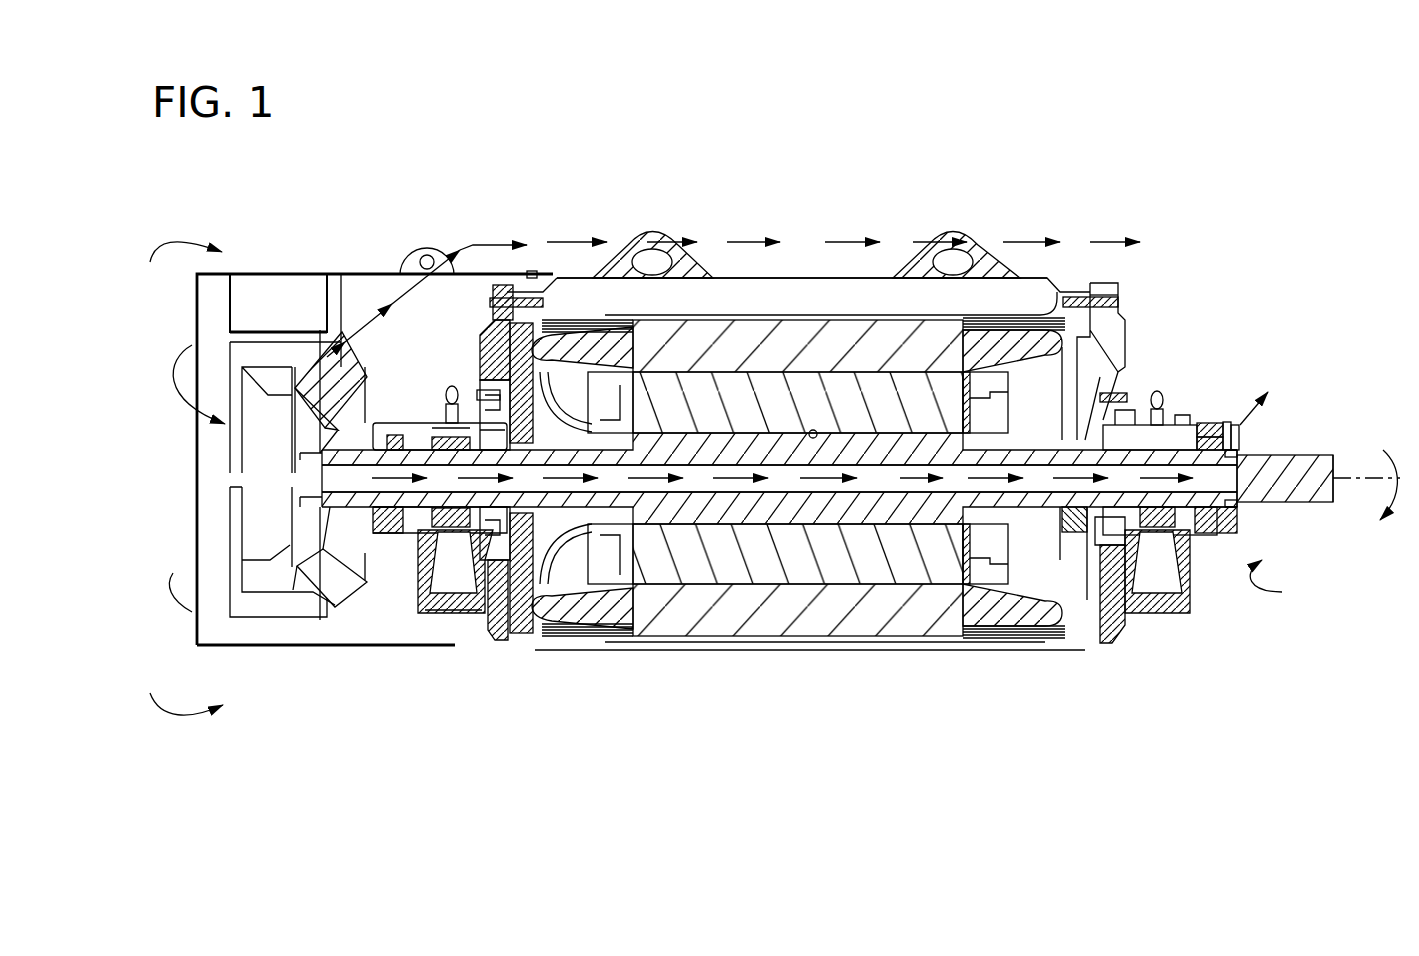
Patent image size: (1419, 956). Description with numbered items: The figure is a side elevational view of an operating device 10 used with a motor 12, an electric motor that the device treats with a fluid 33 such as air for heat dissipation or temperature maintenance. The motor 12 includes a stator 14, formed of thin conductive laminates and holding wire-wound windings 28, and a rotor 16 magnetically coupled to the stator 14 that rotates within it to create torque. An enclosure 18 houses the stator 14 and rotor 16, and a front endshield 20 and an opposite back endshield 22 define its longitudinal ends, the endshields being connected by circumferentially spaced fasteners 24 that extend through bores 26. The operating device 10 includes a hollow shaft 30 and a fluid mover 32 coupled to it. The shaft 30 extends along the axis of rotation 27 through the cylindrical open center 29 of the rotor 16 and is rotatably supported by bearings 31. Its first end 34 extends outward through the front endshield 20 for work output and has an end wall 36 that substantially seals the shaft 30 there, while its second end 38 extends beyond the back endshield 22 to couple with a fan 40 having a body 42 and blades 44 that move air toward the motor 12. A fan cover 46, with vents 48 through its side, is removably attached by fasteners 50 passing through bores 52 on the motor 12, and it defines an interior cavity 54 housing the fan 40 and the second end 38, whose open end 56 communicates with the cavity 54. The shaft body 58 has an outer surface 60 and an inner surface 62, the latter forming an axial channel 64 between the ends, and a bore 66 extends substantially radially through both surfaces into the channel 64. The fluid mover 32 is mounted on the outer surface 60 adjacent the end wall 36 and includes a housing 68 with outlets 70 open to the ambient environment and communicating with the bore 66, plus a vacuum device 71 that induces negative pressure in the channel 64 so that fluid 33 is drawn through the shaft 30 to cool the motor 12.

The operating device 10 is at (1233, 393).
The motor 12 is at (763, 230).
The stator 14 is at (847, 320).
The rotor 16 is at (786, 390).
The enclosure 18 is at (727, 276).
The front endshield 20 is at (1123, 338).
The back endshield 22 is at (487, 323).
The fasteners 24 is at (472, 318).
The bores 26 is at (512, 322).
The axis of rotation 27 is at (1365, 470).
The windings 28 is at (872, 342).
The open center 29 is at (815, 430).
The hollow shaft 30 is at (737, 530).
The bearings 31 is at (397, 425).
The fluid mover 32 is at (1220, 417).
The fluid 33 is at (1060, 492).
The first end 34 is at (1303, 455).
The end wall 36 is at (1333, 495).
The second end 38 is at (365, 560).
The fan 40 is at (312, 453).
The body 42 is at (352, 435).
The blades 44 is at (327, 577).
The fan cover 46 is at (322, 273).
The vents 48 is at (223, 532).
The fasteners 50 is at (533, 271).
The bores 52 is at (553, 300).
The interior cavity 54 is at (437, 348).
The open end 56 is at (320, 487).
The body 58 is at (843, 510).
The outer surface 60 is at (900, 527).
The inner surface 62 is at (793, 487).
The channel 64 is at (898, 490).
The bore 66 is at (1237, 497).
The housing 68 is at (1240, 520).
The outlets 70 is at (1282, 583).
The vacuum device 71 is at (1240, 430).